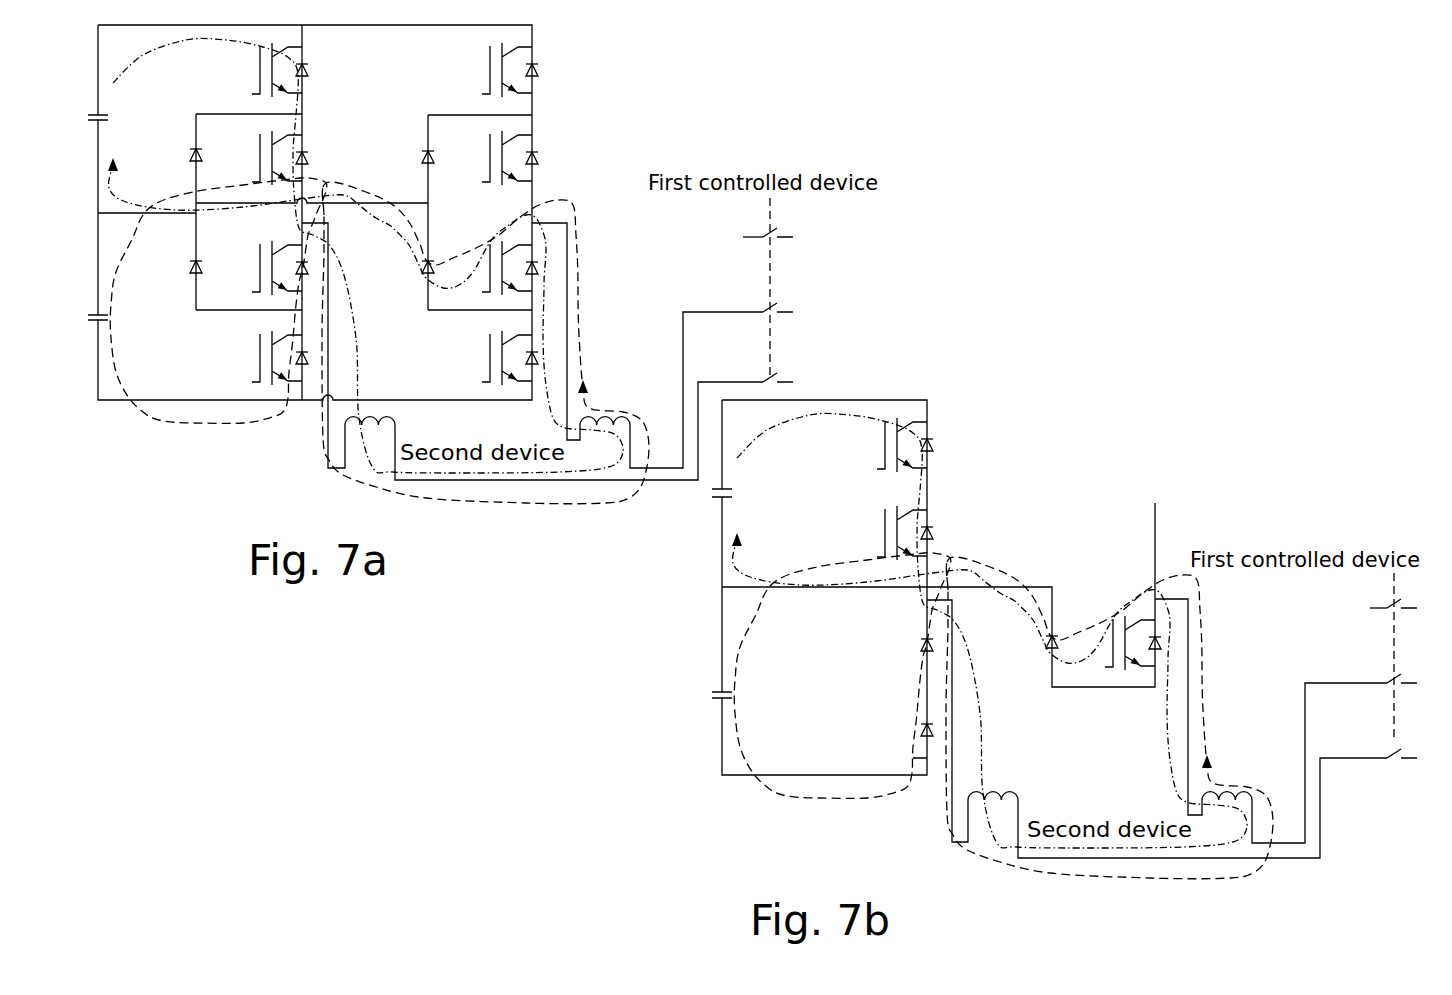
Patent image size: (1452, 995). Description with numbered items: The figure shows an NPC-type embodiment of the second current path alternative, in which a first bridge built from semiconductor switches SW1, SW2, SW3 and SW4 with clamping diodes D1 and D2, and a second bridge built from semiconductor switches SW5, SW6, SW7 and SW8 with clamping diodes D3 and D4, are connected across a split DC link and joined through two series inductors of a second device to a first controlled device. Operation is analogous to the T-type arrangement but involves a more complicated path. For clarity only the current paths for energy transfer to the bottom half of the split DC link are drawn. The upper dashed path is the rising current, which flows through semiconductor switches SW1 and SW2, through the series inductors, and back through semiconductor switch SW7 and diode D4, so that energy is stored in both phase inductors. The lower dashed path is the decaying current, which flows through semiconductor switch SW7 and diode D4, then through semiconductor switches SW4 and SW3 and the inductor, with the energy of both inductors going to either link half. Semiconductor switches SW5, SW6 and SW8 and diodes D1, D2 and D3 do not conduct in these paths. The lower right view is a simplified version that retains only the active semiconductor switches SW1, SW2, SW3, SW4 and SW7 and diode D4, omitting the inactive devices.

In FIG. 7a, the semiconductor switch SW1 is at (252, 70).
In FIG. 7b, the semiconductor switch SW1 is at (879, 445).
In FIG. 7a, the semiconductor switch SW2 is at (252, 157).
In FIG. 7b, the semiconductor switch SW2 is at (879, 533).
In FIG. 7a, the semiconductor switch SW3 is at (252, 267).
In FIG. 7b, the semiconductor switch SW3 is at (884, 644).
In FIG. 7a, the semiconductor switch SW4 is at (252, 358).
In FIG. 7b, the semiconductor switch SW4 is at (884, 730).
In FIG. 7a, the semiconductor switch SW5 is at (483, 70).
In FIG. 7a, the semiconductor switch SW6 is at (484, 158).
In FIG. 7a, the semiconductor switch SW7 is at (487, 268).
In FIG. 7b, the semiconductor switch SW7 is at (1110, 643).
In FIG. 7a, the semiconductor switch SW8 is at (483, 358).
In FIG. 7a, the diode D1 is at (174, 172).
In FIG. 7a, the diode D2 is at (174, 249).
In FIG. 7a, the diode D3 is at (403, 176).
In FIG. 7a, the diode D4 is at (404, 257).
In FIG. 7b, the diode D4 is at (1021, 633).